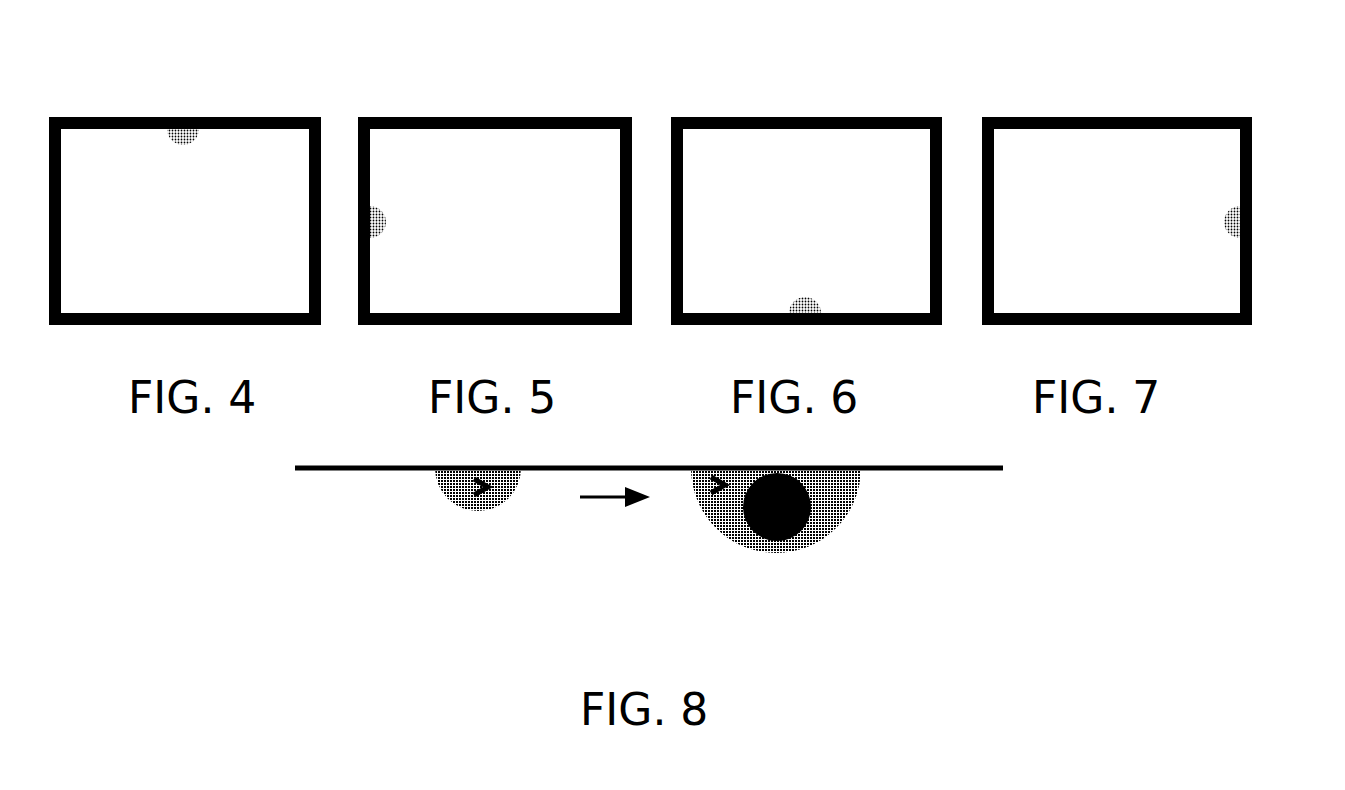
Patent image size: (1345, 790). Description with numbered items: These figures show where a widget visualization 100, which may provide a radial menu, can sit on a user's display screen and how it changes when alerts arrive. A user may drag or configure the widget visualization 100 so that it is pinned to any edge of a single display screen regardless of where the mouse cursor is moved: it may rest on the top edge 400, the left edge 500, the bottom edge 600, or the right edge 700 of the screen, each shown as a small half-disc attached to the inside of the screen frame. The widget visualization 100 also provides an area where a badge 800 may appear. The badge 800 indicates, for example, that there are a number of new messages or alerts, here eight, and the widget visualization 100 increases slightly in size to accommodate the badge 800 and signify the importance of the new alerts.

In FIG. 4, the widget visualization 100 is at (183, 142).
In FIG. 5, the widget visualization 100 is at (388, 217).
In FIG. 6, the widget visualization 100 is at (807, 298).
In FIG. 7, the widget visualization 100 is at (1222, 225).
In FIG. 8, the widget visualization 100 is at (455, 500).
In FIG. 4, the top edge 400 is at (188, 127).
In FIG. 5, the left edge 500 is at (360, 225).
In FIG. 6, the bottom edge 600 is at (808, 315).
In FIG. 7, the right edge 700 is at (1246, 220).
In FIG. 8, the badge 800 is at (800, 545).